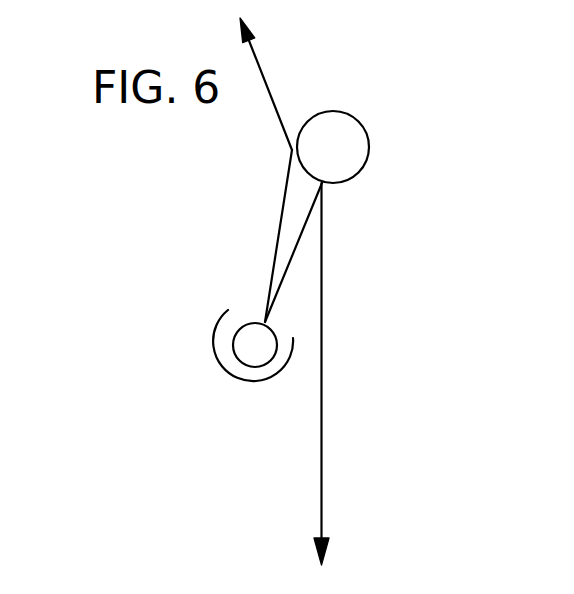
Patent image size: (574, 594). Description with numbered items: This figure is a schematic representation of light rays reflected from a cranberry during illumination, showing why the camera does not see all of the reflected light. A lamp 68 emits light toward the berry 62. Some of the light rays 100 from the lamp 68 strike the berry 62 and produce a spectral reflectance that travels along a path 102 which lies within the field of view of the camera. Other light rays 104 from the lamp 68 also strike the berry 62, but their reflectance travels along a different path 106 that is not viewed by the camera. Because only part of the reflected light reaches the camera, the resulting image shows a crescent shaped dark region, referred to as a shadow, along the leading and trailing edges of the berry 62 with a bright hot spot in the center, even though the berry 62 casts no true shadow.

The berry 62 is at (365, 128).
The lamp 68 is at (230, 368).
The light rays 100 is at (297, 245).
The path 102 is at (322, 354).
The light rays 104 is at (280, 222).
The path 106 is at (267, 78).